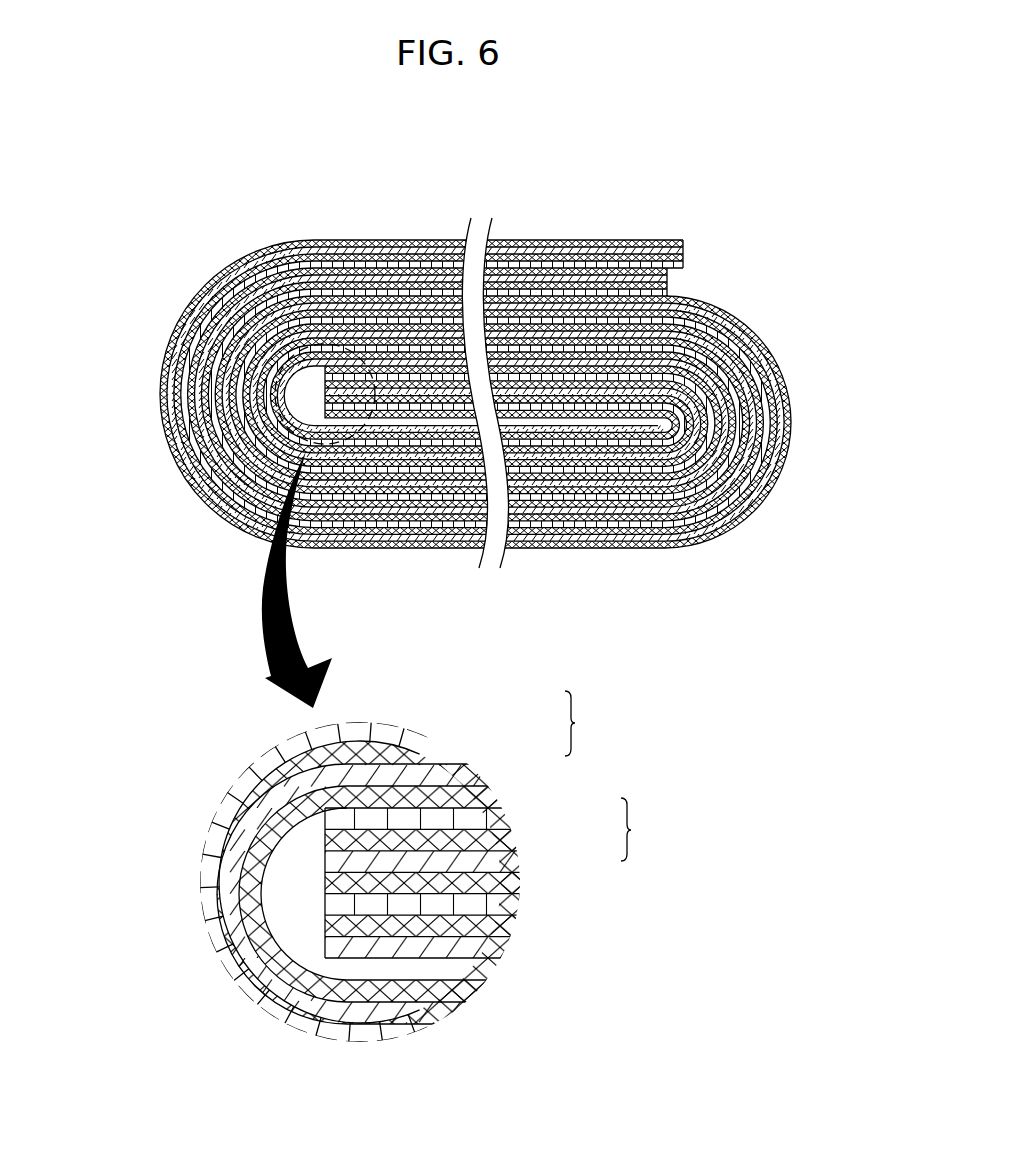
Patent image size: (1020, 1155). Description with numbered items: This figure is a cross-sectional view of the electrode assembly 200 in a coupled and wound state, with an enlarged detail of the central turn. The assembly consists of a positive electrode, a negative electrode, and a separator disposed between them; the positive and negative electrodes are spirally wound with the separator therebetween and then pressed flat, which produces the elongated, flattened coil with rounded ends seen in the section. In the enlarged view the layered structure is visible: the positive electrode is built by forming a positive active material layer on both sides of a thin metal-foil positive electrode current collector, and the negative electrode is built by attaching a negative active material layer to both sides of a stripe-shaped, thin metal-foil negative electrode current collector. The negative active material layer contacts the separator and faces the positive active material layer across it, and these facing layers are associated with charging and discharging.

The electrode assembly 200 is at (475, 383).